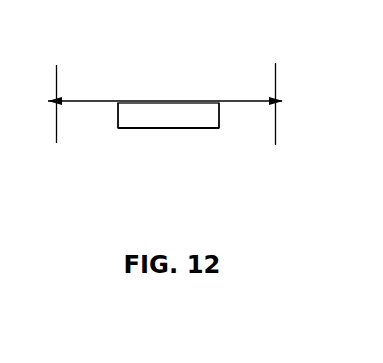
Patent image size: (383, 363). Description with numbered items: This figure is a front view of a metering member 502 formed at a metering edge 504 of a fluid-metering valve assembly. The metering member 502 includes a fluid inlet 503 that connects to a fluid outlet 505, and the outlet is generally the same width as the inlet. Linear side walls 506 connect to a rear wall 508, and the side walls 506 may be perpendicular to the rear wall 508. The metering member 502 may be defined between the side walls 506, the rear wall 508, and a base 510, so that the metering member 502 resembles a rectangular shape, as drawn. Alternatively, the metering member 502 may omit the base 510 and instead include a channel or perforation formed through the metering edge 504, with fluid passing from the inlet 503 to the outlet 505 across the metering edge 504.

The metering member 502 is at (206, 90).
The fluid inlet 503 is at (178, 100).
The metering edge 504 is at (102, 100).
The fluid outlet 505 is at (208, 128).
The side walls 506 is at (118, 120).
The rear wall 508 is at (138, 128).
The base 510 is at (162, 117).